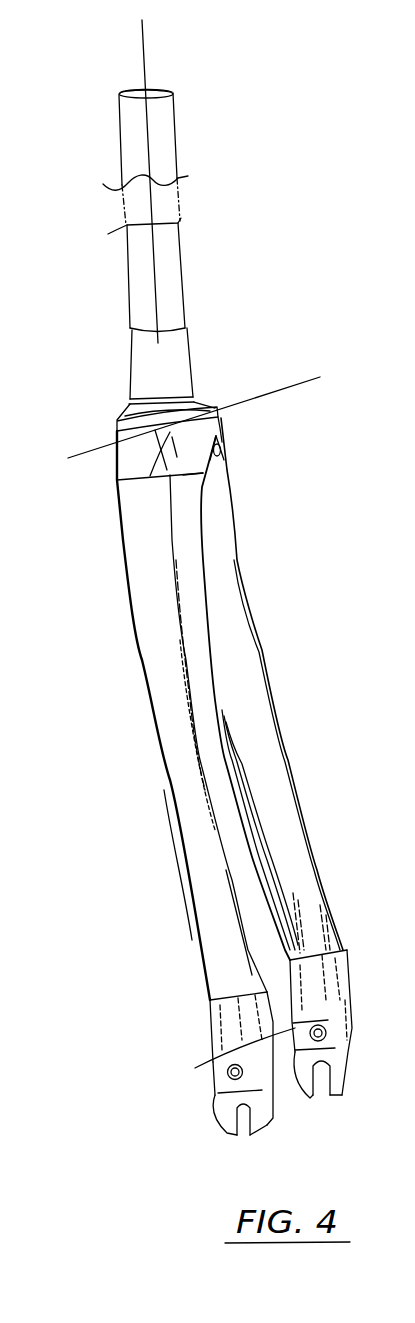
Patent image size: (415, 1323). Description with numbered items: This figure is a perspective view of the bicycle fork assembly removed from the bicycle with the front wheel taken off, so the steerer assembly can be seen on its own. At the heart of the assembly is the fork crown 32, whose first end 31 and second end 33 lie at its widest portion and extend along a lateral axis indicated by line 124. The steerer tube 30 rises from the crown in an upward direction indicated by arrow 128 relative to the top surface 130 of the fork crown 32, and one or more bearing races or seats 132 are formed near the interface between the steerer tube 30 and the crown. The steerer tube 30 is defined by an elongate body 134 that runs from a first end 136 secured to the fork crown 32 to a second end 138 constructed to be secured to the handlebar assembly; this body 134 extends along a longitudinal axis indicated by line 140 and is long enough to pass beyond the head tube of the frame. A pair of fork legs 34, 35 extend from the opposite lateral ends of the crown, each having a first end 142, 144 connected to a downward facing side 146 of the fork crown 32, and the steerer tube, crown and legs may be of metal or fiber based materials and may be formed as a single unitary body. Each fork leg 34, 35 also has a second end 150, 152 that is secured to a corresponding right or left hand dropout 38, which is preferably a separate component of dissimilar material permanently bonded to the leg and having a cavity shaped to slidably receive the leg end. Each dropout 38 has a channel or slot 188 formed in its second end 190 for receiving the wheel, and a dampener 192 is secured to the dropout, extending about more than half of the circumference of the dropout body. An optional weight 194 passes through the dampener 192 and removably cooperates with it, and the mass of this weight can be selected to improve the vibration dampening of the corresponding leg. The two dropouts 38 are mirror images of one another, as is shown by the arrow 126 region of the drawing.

The steerer tube 30 is at (163, 133).
The first end 31 is at (113, 432).
The fork crown 32 is at (219, 448).
The second end 33 is at (223, 430).
The fork leg 34 is at (143, 668).
The fork leg 35 is at (262, 650).
The dropout 38 is at (228, 1023).
The lateral axis line 124 is at (321, 377).
The direction arrow 126 is at (211, 375).
The upward direction arrow 128 is at (100, 333).
The top surface 130 is at (117, 422).
The bearing race 132 is at (193, 410).
The elongate body 134 is at (168, 262).
The first end 136 is at (192, 403).
The second end 138 is at (157, 91).
The longitudinal axis line 140 is at (143, 35).
The first end 142 is at (252, 505).
The first end 144 is at (105, 514).
The downward facing side 146 is at (118, 486).
The second end 150 is at (360, 952).
The second end 152 is at (195, 1000).
The slot 188 is at (243, 1128).
The second end 190 is at (227, 1130).
The dampener 192 is at (213, 1068).
The weight 194 is at (232, 1078).